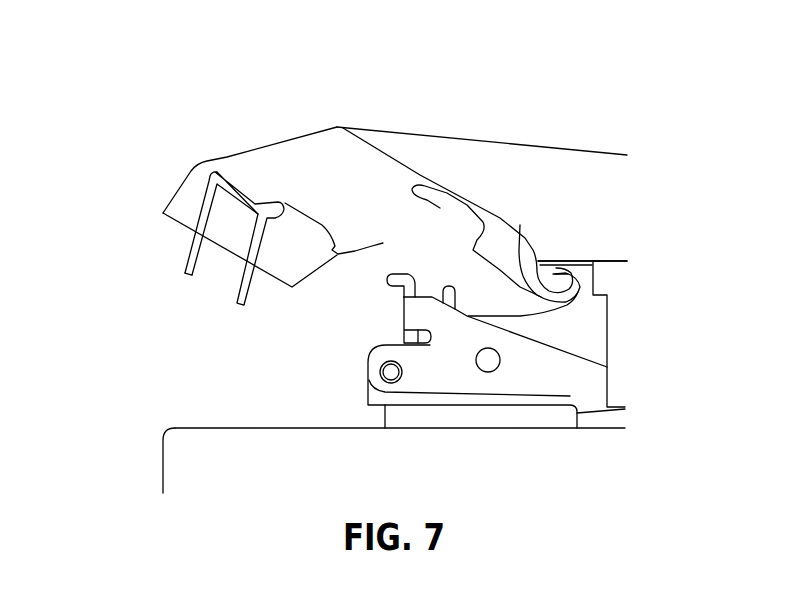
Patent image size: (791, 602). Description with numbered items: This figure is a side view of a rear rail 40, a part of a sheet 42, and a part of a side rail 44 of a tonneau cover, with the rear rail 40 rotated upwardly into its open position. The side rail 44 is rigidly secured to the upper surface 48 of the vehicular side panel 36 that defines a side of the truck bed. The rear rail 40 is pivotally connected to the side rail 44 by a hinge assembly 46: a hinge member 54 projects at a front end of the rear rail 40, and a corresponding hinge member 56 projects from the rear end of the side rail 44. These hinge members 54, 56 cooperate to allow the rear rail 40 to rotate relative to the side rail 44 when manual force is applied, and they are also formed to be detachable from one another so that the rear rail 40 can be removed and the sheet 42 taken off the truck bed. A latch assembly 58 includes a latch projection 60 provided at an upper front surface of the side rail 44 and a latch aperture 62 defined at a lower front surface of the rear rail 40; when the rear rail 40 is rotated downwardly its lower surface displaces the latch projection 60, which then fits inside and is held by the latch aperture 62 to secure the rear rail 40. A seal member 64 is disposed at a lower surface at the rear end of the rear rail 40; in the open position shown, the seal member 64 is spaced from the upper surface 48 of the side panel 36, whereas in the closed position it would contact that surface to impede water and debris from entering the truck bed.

The vehicular side panel 36 is at (163, 481).
The rear rail 40 is at (294, 138).
The sheet 42 is at (497, 207).
The side rail 44 is at (607, 278).
The hinge assembly 46 is at (560, 261).
The upper surface 48 is at (195, 428).
The hinge member 54 is at (520, 225).
The hinge member 56 is at (580, 283).
The latch assembly 58 is at (386, 282).
The latch projection 60 is at (397, 291).
The latch aperture 62 is at (383, 243).
The seal member 64 is at (190, 257).